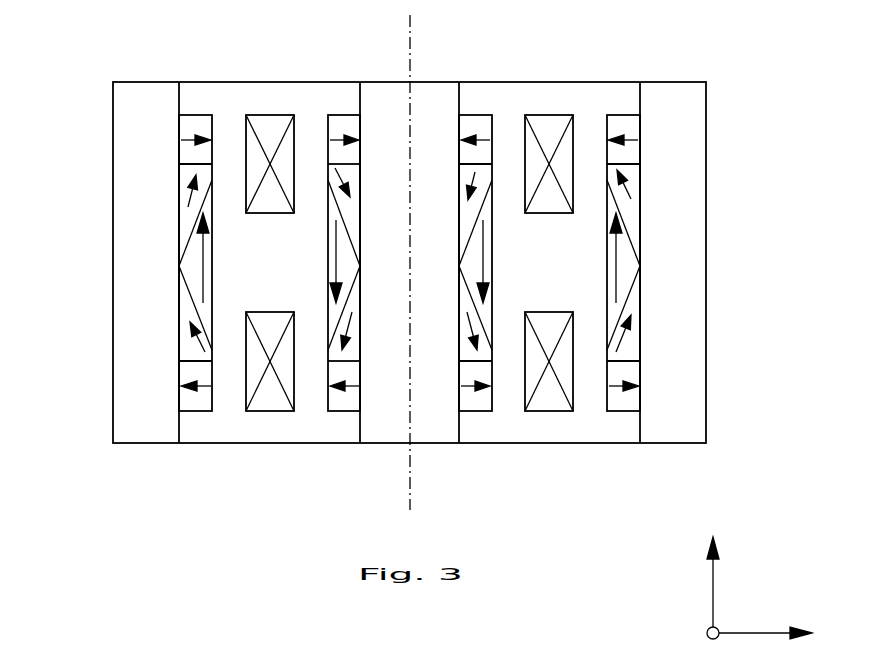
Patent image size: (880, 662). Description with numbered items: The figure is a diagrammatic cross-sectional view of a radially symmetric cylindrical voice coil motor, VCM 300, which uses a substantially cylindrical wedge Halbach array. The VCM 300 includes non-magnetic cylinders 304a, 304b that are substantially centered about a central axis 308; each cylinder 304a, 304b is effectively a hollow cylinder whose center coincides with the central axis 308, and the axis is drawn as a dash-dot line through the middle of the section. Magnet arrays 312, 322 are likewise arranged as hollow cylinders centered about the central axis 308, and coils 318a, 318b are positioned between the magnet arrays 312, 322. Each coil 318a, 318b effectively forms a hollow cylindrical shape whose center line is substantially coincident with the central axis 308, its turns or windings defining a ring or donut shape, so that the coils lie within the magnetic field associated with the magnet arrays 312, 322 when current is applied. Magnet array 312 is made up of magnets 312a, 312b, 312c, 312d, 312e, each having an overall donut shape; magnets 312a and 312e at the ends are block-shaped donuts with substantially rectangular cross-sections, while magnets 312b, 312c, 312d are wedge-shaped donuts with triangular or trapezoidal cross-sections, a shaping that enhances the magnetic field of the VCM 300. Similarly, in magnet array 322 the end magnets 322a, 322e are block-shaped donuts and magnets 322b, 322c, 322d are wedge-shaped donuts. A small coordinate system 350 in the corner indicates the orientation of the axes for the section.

The VCM 300 is at (384, 306).
The non-magnetic cylinder 304a is at (390, 268).
The non-magnetic cylinder 304b is at (430, 243).
The central axis 308 is at (454, 262).
The magnet array 312 is at (383, 297).
The magnet 312a is at (410, 103).
The magnet 312b is at (404, 218).
The magnet 312c is at (403, 258).
The magnet 312d is at (404, 324).
The magnet 312e is at (439, 433).
The coil 318a is at (351, 115).
The coil 318b is at (443, 417).
The magnet array 322 is at (410, 305).
The magnet 322a is at (257, 115).
The magnet 322b is at (401, 217).
The magnet 322c is at (407, 261).
The magnet 322d is at (415, 308).
The magnet 322e is at (447, 441).
The coordinate system 350 is at (759, 633).